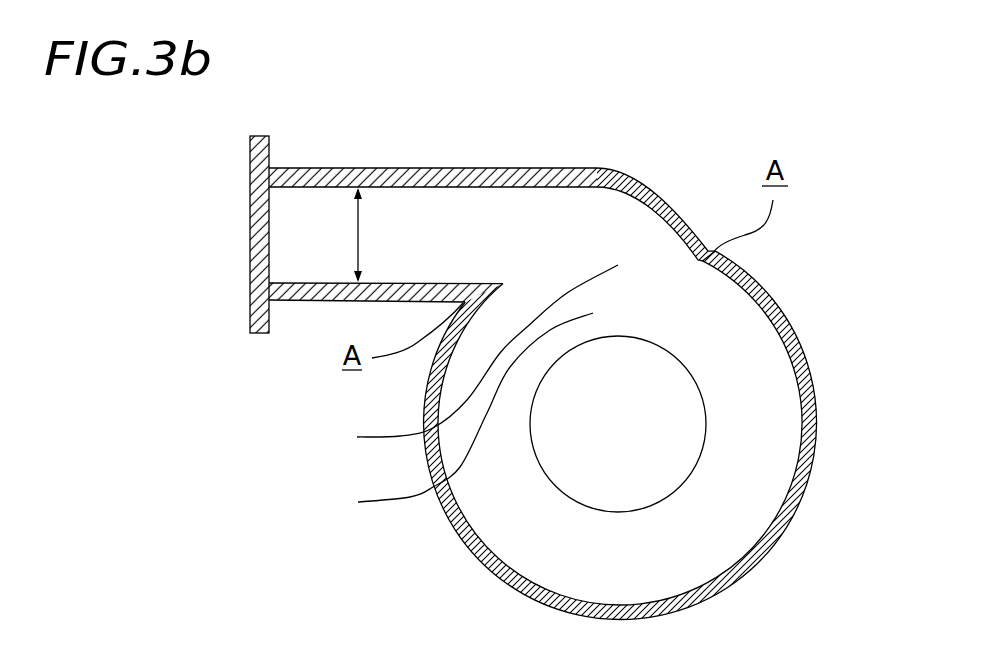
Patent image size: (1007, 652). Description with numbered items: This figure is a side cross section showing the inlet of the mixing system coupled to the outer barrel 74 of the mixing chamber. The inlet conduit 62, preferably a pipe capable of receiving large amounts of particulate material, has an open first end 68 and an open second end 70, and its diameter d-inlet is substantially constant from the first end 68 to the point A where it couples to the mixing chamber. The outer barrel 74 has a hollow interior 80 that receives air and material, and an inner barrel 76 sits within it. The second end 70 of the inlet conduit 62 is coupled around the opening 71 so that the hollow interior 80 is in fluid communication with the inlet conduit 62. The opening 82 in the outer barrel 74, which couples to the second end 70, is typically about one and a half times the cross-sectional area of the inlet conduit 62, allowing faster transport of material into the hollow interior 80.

The inlet conduit 62 is at (473, 168).
The first end 68 is at (284, 168).
The second end 70 is at (667, 193).
The opening 71 is at (468, 358).
The outer barrel 74 is at (780, 527).
The inner barrel 76 is at (660, 458).
The hollow interior 80 is at (745, 362).
The opening 82 is at (455, 416).